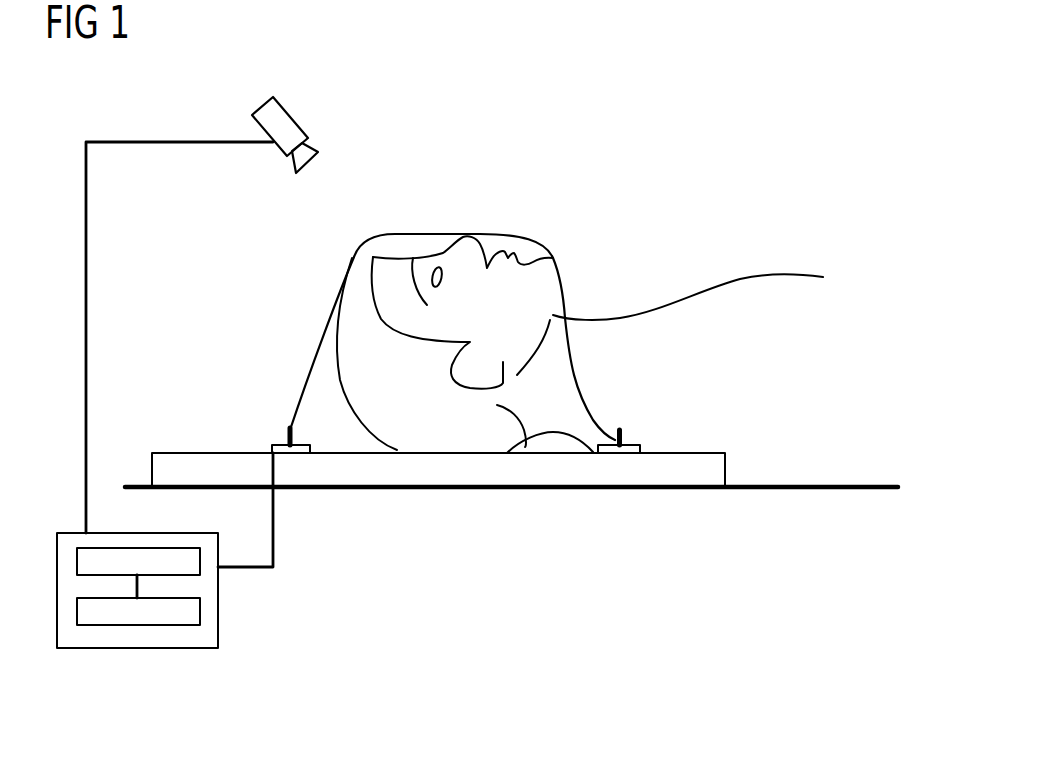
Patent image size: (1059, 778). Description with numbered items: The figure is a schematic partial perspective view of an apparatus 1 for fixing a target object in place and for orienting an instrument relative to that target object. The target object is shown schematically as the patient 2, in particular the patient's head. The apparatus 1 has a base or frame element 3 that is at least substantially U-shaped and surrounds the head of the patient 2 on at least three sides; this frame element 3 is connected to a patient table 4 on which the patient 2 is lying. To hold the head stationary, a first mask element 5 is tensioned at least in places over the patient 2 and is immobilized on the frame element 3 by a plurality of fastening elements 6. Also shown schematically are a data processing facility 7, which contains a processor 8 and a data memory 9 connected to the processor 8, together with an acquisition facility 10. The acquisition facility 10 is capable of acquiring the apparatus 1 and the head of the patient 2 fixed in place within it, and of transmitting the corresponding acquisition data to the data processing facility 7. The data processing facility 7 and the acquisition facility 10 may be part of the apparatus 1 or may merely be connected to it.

The apparatus 1 is at (438, 506).
The patient 2 is at (453, 268).
The frame element 3 is at (357, 477).
The patient table 4 is at (852, 483).
The first mask element 5 is at (318, 330).
The fastening elements 6 is at (293, 455).
The data processing facility 7 is at (117, 588).
The processor 8 is at (108, 547).
The data memory 9 is at (175, 627).
The acquisition facility 10 is at (292, 118).